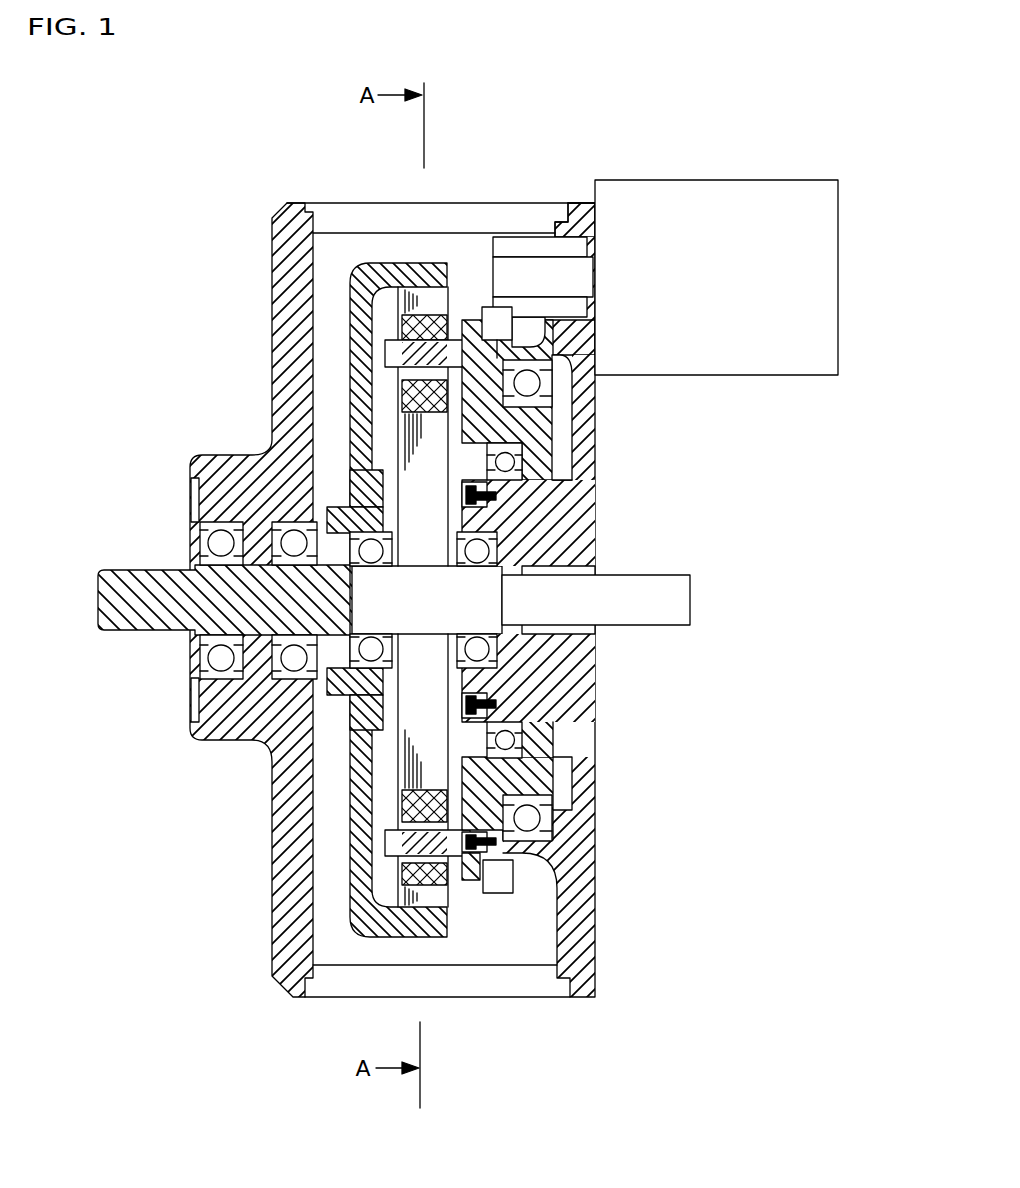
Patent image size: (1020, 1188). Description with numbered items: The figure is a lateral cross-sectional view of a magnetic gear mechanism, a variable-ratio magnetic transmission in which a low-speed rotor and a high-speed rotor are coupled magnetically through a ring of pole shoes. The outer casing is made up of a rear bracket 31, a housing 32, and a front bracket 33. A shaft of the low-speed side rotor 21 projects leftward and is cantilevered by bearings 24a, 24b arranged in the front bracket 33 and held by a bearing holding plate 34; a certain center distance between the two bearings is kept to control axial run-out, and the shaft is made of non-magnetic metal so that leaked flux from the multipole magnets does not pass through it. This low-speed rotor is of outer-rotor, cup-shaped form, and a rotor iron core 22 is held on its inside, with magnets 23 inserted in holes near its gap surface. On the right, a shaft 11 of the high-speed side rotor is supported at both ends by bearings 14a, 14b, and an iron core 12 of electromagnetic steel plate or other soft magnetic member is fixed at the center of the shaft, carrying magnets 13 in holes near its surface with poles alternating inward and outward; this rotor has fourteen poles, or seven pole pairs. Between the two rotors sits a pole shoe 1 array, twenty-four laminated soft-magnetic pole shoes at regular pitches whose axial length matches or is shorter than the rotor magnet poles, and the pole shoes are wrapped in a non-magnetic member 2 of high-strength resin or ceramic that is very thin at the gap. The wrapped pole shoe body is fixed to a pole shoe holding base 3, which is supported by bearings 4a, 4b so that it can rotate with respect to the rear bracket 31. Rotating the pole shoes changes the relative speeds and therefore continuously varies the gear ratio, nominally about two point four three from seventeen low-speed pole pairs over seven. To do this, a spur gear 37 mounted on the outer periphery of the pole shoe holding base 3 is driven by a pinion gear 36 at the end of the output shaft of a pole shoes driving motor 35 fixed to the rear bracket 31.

The pole shoe 1 is at (470, 857).
The non-magnetic member 2 is at (395, 845).
The pole shoe holding base 3 is at (520, 432).
The bearing 4a is at (516, 470).
The bearing 4b is at (540, 397).
The shaft 11 is at (676, 607).
The iron core 12 is at (440, 687).
The magnet 13 is at (545, 815).
The bearing 14a is at (500, 562).
The bearing 14b is at (402, 533).
The shaft of low-speed side rotor 21 is at (133, 622).
The rotor iron core 22 is at (437, 902).
The magnet 23 is at (505, 880).
The bearing 24a is at (205, 537).
The bearing 24b is at (283, 530).
The rear bracket 31 is at (596, 984).
The housing 32 is at (333, 221).
The front bracket 33 is at (276, 354).
The bearing holding plate 34 is at (192, 716).
The pole shoes driving motor 35 is at (712, 198).
The pinion gear 36 is at (520, 247).
The spur gear 37 is at (491, 318).